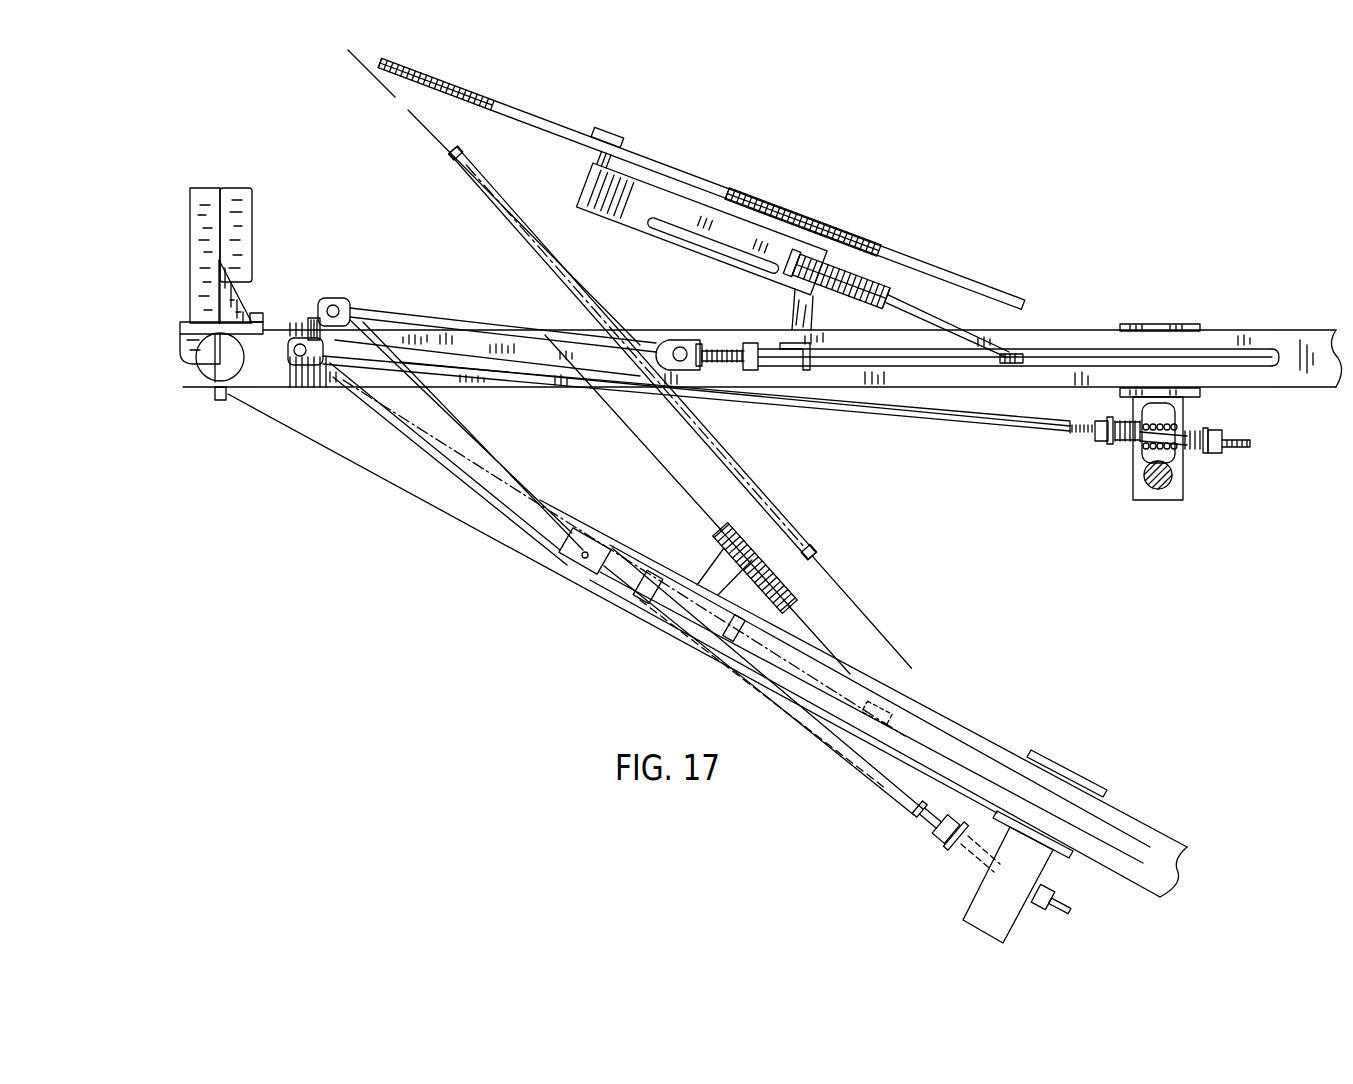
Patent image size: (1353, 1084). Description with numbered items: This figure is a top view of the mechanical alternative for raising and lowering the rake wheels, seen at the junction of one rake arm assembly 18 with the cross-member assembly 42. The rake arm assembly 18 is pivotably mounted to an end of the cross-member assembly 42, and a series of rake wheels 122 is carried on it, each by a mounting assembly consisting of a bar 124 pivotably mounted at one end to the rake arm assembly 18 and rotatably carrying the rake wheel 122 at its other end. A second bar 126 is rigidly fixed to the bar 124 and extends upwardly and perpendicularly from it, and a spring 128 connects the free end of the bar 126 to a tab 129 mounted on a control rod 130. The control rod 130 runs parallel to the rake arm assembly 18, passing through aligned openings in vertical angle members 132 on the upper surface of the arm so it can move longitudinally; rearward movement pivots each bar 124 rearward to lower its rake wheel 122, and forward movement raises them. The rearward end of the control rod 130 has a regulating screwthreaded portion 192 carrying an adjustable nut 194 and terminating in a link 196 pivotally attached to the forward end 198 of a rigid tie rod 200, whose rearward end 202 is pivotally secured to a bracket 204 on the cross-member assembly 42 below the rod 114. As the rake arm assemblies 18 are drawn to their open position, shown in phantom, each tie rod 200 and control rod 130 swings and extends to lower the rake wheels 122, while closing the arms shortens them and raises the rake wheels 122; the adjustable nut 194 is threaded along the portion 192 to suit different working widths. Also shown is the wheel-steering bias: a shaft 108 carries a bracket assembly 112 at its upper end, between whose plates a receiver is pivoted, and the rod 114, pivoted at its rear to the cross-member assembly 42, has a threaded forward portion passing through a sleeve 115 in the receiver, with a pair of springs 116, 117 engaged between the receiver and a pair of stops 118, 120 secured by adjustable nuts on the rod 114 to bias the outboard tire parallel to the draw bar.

The rake arm assembly 18 is at (1247, 329).
The cross-member assembly 42 is at (182, 291).
The shaft 108 is at (1165, 490).
The bracket assembly 112 is at (1185, 418).
The rod 114 is at (895, 406).
The sleeve 115 is at (1130, 428).
The spring 116 is at (1194, 455).
The spring 117 is at (1127, 444).
The stop 118 is at (1116, 441).
The stop 120 is at (1205, 458).
The rake wheel 122 is at (700, 172).
The bar 124 is at (690, 235).
The second bar 126 is at (757, 232).
The spring 128 is at (893, 297).
The tab 129 is at (1020, 354).
The control rod 130 is at (1087, 358).
The vertical angle member 132 is at (804, 362).
The regulating screwthreaded portion 192 is at (726, 350).
The adjustable nut 194 is at (751, 343).
The link 196 is at (681, 345).
The forward end 198 is at (665, 338).
The tie rod 200 is at (487, 325).
The rearward end 202 is at (342, 297).
The bracket 204 is at (317, 330).